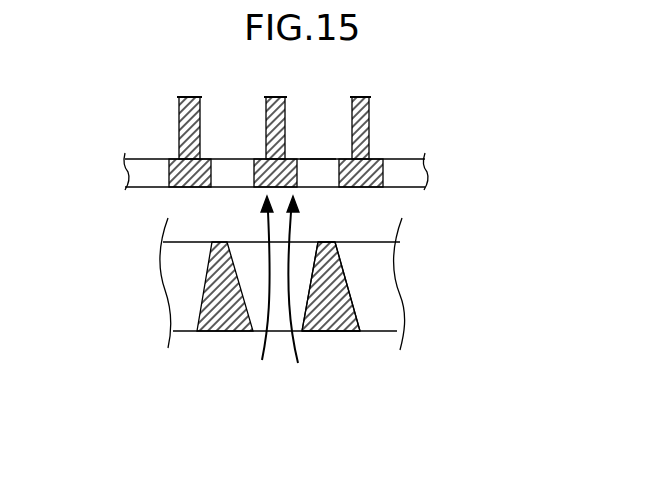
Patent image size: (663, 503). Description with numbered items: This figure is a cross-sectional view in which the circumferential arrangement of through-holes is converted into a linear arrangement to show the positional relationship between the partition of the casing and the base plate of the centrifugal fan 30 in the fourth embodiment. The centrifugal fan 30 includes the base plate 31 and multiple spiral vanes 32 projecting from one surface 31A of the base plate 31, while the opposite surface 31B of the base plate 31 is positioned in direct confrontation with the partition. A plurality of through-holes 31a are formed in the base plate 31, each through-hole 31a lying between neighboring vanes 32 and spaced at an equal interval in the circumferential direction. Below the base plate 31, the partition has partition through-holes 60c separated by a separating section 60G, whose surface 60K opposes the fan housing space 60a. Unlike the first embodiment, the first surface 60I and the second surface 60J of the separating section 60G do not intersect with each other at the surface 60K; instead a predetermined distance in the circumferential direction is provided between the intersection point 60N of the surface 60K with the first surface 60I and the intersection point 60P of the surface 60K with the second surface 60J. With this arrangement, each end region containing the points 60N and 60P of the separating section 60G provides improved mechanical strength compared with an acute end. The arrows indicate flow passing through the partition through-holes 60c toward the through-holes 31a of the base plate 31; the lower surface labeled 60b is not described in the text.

The centrifugal fan 30 is at (422, 156).
The base plate 31 is at (393, 158).
The through-hole 31a is at (317, 168).
The one surface of the base plate 31A is at (408, 157).
The opposite surface of the base plate 31B is at (406, 188).
The spiral vane 32 is at (371, 107).
The fan housing space 60a is at (215, 207).
The lower surface of member 60b is at (192, 348).
The partition through-hole 60c is at (259, 296).
The surface of the separating section 60K is at (400, 237).
The intersection point 60N is at (320, 240).
The intersection point 60P is at (334, 241).
The first surface 60I is at (310, 272).
The second surface 60J is at (352, 303).
The separating section 60G is at (338, 333).